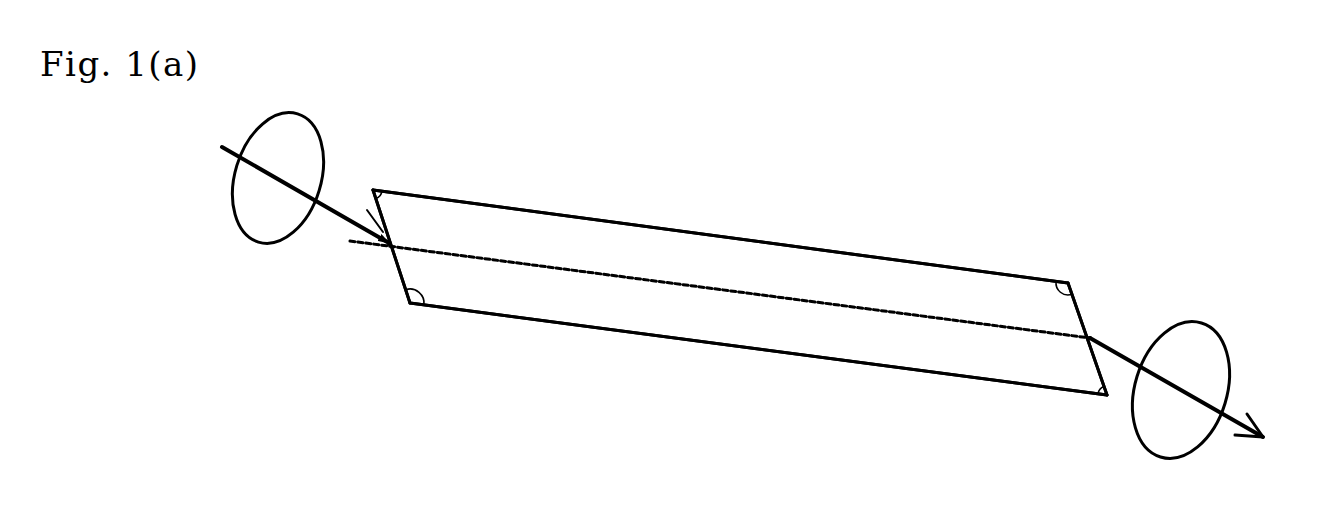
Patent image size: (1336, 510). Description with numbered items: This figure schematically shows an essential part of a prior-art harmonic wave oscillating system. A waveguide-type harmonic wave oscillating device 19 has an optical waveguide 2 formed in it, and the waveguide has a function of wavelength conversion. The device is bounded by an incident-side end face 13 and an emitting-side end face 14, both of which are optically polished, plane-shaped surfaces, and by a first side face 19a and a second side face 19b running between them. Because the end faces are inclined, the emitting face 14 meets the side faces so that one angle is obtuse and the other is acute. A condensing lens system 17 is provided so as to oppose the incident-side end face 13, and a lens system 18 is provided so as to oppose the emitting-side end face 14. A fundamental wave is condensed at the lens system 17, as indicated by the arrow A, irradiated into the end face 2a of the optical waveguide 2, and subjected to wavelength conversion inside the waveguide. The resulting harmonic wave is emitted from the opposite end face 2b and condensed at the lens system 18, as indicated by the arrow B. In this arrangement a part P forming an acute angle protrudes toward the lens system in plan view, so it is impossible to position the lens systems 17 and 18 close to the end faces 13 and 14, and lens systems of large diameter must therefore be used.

The optical waveguide 2 is at (755, 290).
The end face of the optical waveguide 2a is at (390, 250).
The end face of the optical waveguide 2b is at (1095, 337).
The incident-side end face 13 is at (376, 256).
The emitting-side end face 14 is at (1098, 324).
The condensing lens system 17 is at (318, 112).
The lens system 18 is at (1203, 337).
The waveguide-type harmonic wave oscillating device 19 is at (882, 255).
The side face 19a is at (680, 230).
The side face 19b is at (717, 345).
The arrow indicating the fundamental wave A is at (328, 203).
The arrow indicating the harmonic wave B is at (1197, 393).
The part forming an acute angle P is at (389, 206).